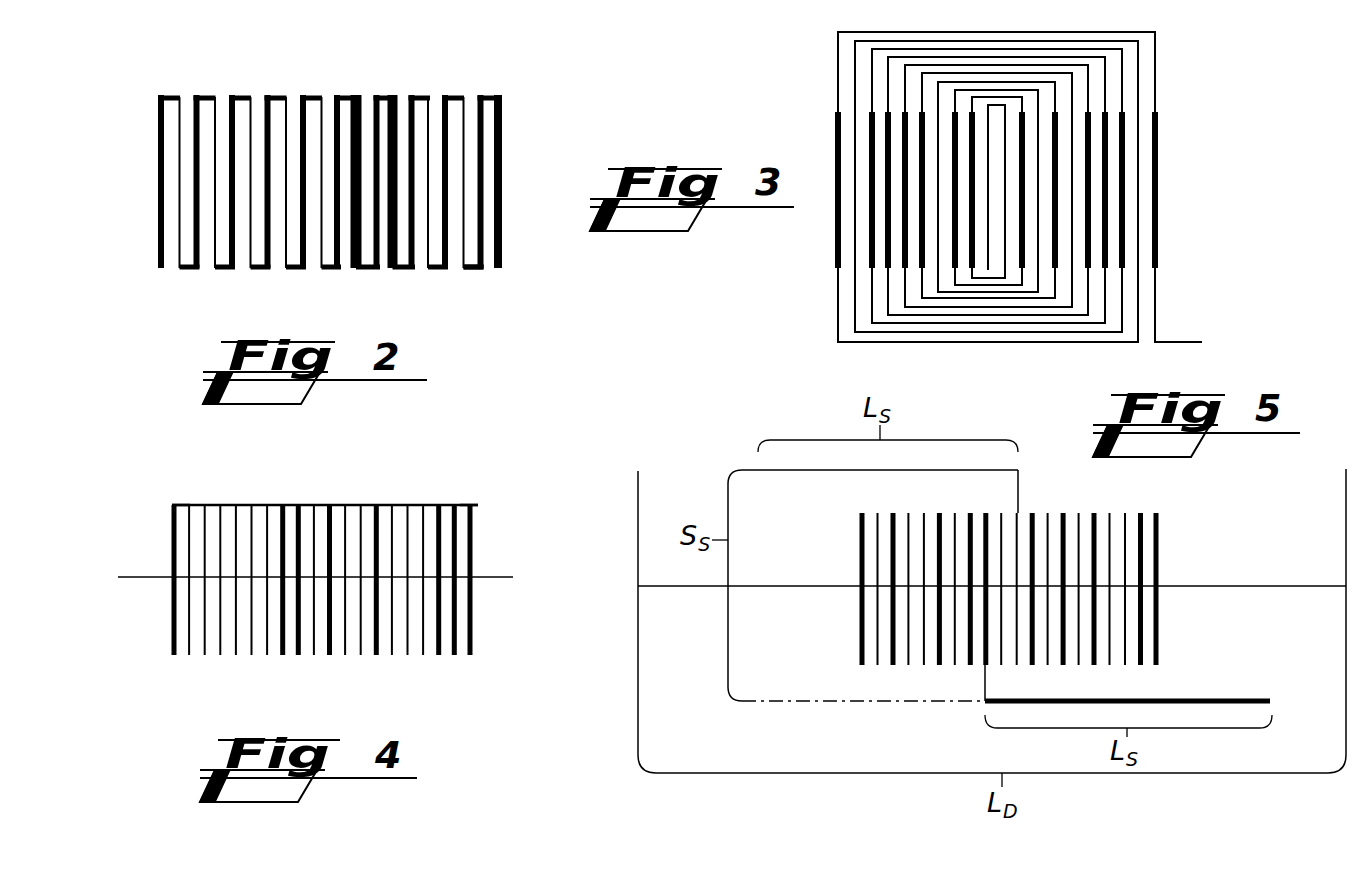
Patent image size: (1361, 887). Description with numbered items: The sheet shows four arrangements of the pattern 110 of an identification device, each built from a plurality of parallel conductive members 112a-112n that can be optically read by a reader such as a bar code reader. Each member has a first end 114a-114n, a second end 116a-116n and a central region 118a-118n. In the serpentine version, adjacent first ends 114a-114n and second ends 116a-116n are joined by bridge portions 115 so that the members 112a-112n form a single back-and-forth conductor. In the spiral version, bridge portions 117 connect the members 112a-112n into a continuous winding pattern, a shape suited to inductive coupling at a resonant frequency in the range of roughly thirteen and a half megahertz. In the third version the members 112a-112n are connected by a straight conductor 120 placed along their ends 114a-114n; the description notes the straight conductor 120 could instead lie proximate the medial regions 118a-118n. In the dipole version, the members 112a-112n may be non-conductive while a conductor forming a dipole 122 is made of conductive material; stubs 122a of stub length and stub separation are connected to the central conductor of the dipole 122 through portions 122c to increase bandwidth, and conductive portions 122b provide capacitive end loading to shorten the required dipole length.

In FIG. 2, the pattern 110 is at (408, 78).
In FIG. 3, the pattern 110 is at (1185, 97).
In FIG. 4, the pattern 110 is at (486, 485).
In FIG. 5, the pattern 110 is at (1186, 562).
In FIG. 2, the first conductive member 112a is at (152, 170).
In FIG. 3, the first conductive member 112a is at (830, 227).
In FIG. 4, the first conductive member 112a is at (160, 582).
In FIG. 5, the first conductive member 112a is at (860, 619).
In FIG. 2, the last conductive member 112n is at (505, 168).
In FIG. 3, the last conductive member 112n is at (1168, 192).
In FIG. 4, the last conductive member 112n is at (494, 538).
In FIG. 5, the last conductive member 112n is at (1214, 608).
In FIG. 2, the first end of first conductive member 114a is at (158, 117).
In FIG. 4, the first end of first conductive member 114a is at (172, 532).
In FIG. 2, the first end of last conductive member 114n is at (503, 100).
In FIG. 4, the first end of last conductive member 114n is at (478, 507).
In FIG. 2, the bridge portion 115 is at (185, 270).
In FIG. 2, the second end of first conductive member 116a is at (158, 260).
In FIG. 2, the second end of last conductive member 116n is at (500, 237).
In FIG. 3, the bridge portion 117 is at (868, 32).
In FIG. 4, the central region of first conductive member 118a is at (172, 615).
In FIG. 4, the central region of last conductive member 118n is at (480, 580).
In FIG. 4, the straight conductor 120 is at (330, 505).
In FIG. 5, the dipole 122 is at (1098, 586).
In FIG. 5, the stub 122a is at (838, 470).
In FIG. 5, the conductive portion 122b is at (638, 503).
In FIG. 5, the connecting portion 122c is at (985, 700).